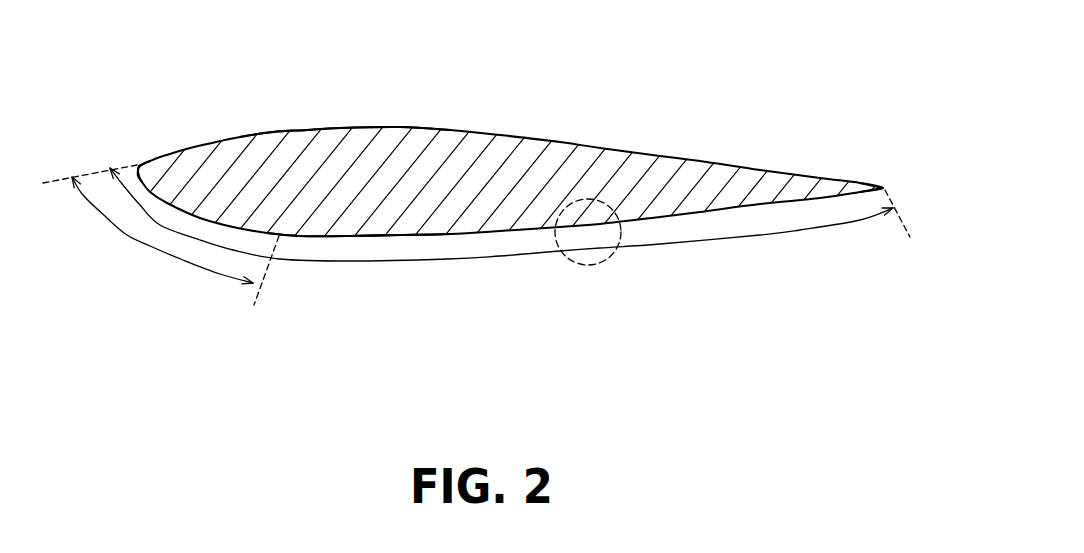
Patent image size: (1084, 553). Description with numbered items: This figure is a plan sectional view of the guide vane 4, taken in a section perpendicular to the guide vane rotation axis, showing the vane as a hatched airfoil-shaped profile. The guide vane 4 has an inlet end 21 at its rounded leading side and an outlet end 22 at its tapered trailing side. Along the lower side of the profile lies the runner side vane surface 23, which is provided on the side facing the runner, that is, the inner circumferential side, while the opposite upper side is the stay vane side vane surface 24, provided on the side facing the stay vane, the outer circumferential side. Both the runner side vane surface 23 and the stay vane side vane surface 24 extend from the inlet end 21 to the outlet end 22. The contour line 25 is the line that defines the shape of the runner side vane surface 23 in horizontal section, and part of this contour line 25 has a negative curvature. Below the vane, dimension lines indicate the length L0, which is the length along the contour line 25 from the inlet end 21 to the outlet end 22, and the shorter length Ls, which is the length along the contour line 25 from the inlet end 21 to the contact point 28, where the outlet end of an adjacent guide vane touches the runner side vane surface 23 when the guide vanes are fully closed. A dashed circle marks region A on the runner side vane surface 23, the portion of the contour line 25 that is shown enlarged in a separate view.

The guide vane 4 is at (495, 112).
The inlet end 21 is at (139, 164).
The outlet end 22 is at (886, 189).
The runner side vane surface 23 is at (332, 238).
The stay vane side vane surface 24 is at (331, 128).
The contour line 25 is at (389, 236).
The contact point 28 is at (284, 238).
The length of the contour line L0 is at (447, 260).
The length from inlet end to contact point Ls is at (186, 262).
The enlarged region A is at (588, 265).